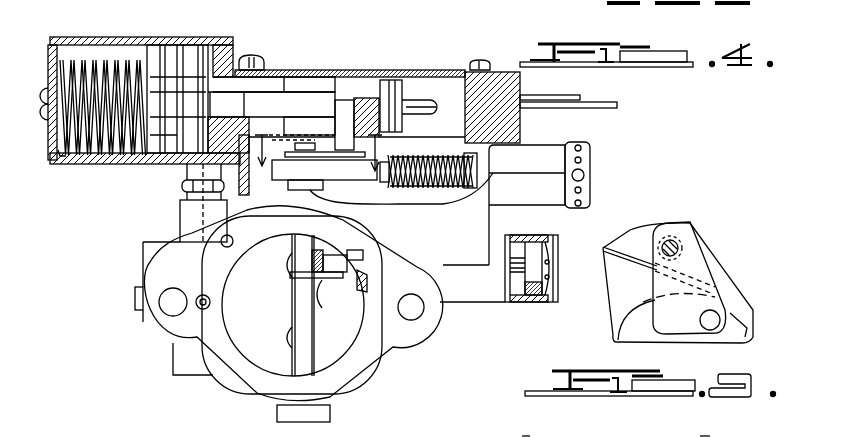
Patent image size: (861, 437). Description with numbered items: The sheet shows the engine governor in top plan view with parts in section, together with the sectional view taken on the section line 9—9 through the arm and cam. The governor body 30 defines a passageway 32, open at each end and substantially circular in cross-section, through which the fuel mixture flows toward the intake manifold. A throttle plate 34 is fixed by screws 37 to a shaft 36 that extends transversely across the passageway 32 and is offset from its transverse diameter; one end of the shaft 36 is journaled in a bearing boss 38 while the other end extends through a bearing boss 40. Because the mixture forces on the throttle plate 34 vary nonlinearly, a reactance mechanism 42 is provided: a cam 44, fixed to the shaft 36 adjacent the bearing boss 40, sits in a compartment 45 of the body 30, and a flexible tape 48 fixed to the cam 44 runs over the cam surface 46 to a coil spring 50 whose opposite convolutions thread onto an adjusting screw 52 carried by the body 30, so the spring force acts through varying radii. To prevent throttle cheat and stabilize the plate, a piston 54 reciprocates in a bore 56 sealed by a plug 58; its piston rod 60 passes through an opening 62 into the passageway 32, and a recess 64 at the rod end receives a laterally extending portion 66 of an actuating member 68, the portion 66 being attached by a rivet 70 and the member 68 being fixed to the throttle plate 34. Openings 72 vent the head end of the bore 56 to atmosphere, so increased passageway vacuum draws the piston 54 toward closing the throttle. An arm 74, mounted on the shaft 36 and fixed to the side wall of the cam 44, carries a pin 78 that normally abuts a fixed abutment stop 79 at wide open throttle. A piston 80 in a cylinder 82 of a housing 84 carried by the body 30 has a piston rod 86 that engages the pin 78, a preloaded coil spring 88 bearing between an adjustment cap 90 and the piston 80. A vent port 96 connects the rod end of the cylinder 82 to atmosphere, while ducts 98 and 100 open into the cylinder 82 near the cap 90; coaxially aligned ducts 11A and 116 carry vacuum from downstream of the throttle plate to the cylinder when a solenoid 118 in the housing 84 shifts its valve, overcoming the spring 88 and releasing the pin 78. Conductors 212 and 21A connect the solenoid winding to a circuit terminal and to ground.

In FIG. 4, the body 30 is at (131, 267).
In FIG. 4, the passageway 32 is at (336, 356).
In FIG. 4, the throttle plate 34 is at (292, 303).
In FIG. 4, the shaft 36 is at (300, 358).
In FIG. 4, the screws 37 is at (290, 273).
In FIG. 4, the bearing boss 38 is at (331, 416).
In FIG. 4, the bearing boss 40 is at (312, 193).
In FIG. 4, the reactance mechanism 42 is at (304, 133).
In FIG. 4, the cam 44 is at (322, 150).
In FIG. 9, the cam 44 is at (637, 328).
In FIG. 4, the compartment 45 is at (181, 206).
In FIG. 9, the cam surface 46 is at (648, 300).
In FIG. 4, the flexible tape 48 is at (392, 160).
In FIG. 9, the flexible tape 48 is at (627, 253).
In FIG. 4, the coil spring 50 is at (472, 195).
In FIG. 4, the adjusting screw 52 is at (478, 170).
In FIG. 4, the piston 54 is at (538, 245).
In FIG. 4, the bore 56 is at (513, 240).
In FIG. 4, the plug 58 is at (556, 252).
In FIG. 4, the piston rod 60 is at (506, 268).
In FIG. 4, the opening 62 is at (352, 277).
In FIG. 4, the recess 64 is at (330, 262).
In FIG. 4, the laterally extending portion 66 is at (345, 268).
In FIG. 4, the actuating member 68 is at (288, 265).
In FIG. 4, the rivet 70 is at (325, 282).
In FIG. 4, the openings 72 is at (550, 266).
In FIG. 4, the arm 74 is at (323, 171).
In FIG. 9, the arm 74 is at (690, 263).
In FIG. 4, the pin 78 is at (360, 98).
In FIG. 9, the pin 78 is at (673, 242).
In FIG. 4, the abutment stop 79 is at (416, 100).
In FIG. 4, the piston 80 is at (141, 166).
In FIG. 4, the cylinder 82 is at (106, 48).
In FIG. 4, the housing 84 is at (237, 46).
In FIG. 4, the piston rod 86 is at (271, 97).
In FIG. 4, the coil spring 88 is at (87, 40).
In FIG. 4, the adjustment cap 90 is at (48, 76).
In FIG. 4, the vent port 96 is at (255, 104).
In FIG. 4, the duct 98 is at (221, 104).
In FIG. 4, the duct 100 is at (114, 163).
In FIG. 4, the duct 11A is at (183, 186).
In FIG. 4, the duct 116 is at (202, 213).
In FIG. 9, the solenoid 118 is at (525, 436).
In FIG. 4, the conductor 212 is at (556, 91).
In FIG. 9, the conductor 212 is at (697, 426).
In FIG. 4, the conductor 21A is at (580, 107).
In FIG. 4, the section line 9— 9 is at (318, 168).